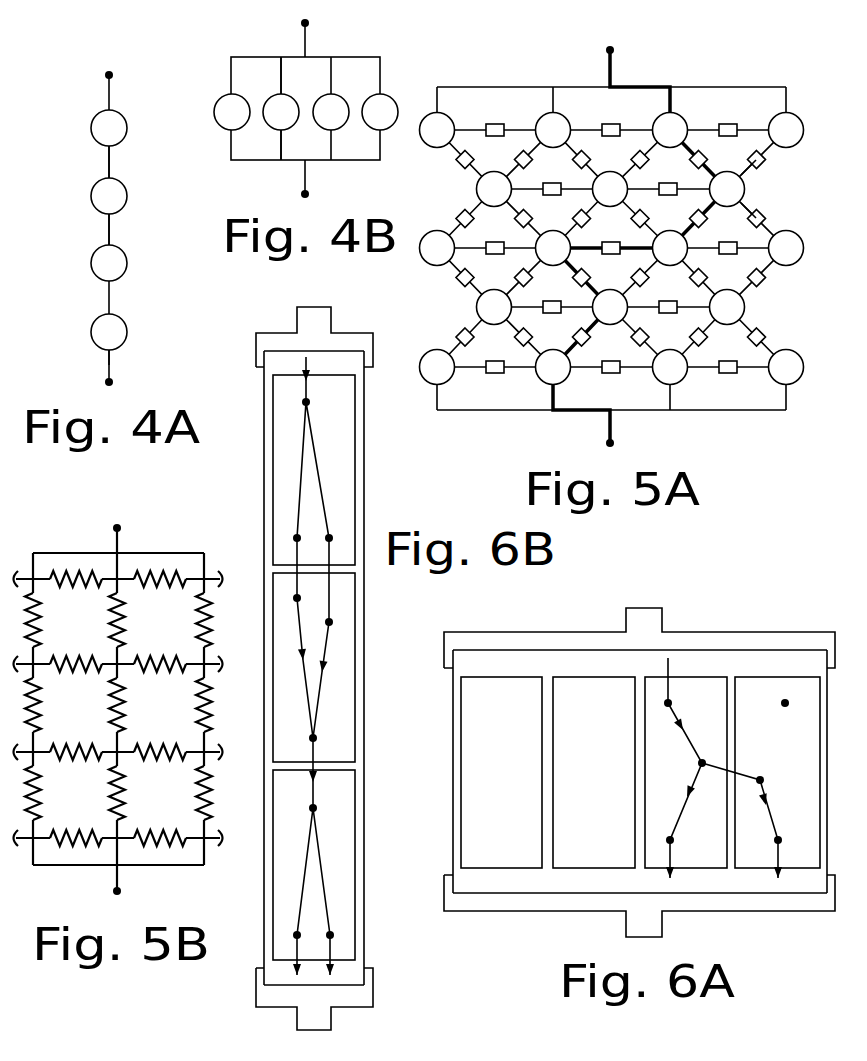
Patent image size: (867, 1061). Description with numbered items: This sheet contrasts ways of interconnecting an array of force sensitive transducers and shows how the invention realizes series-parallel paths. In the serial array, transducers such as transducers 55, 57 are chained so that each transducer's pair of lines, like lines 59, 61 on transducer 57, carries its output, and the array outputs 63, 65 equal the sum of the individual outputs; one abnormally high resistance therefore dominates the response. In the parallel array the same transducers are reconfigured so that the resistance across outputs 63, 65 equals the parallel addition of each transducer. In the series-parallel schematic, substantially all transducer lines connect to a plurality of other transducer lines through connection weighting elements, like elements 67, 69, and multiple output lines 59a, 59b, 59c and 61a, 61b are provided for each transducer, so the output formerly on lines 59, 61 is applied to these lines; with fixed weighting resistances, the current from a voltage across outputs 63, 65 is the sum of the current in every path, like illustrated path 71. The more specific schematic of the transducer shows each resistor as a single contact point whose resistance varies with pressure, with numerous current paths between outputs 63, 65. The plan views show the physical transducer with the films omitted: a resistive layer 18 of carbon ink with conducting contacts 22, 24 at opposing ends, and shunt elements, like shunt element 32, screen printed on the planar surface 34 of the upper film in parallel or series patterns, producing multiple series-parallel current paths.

In FIG. 6B, the resistive layer 18 is at (334, 364).
In FIG. 6A, the resistive layer 18 is at (560, 876).
In FIG. 6B, the conducting contact 22 is at (346, 343).
In FIG. 6A, the conducting contact 22 is at (714, 640).
In FIG. 6B, the conducting contact 24 is at (362, 1001).
In FIG. 6A, the conducting contact 24 is at (745, 902).
In FIG. 6B, the shunt element 32 is at (343, 497).
In FIG. 6A, the shunt element 32 is at (578, 690).
In FIG. 6B, the substantially planar surface 34 is at (340, 707).
In FIG. 6A, the substantially planar surface 34 is at (710, 692).
In FIG. 4A, the transducer 55 is at (94, 130).
In FIG. 4B, the transducer 55 is at (214, 112).
In FIG. 5A, the transducer 55 is at (682, 116).
In FIG. 4A, the transducer 57 is at (95, 207).
In FIG. 4B, the transducer 57 is at (266, 102).
In FIG. 5A, the transducer 57 is at (746, 190).
In FIG. 4A, the line 59 is at (108, 164).
In FIG. 4B, the line 59 is at (278, 72).
In FIG. 5A, the output line 59a is at (757, 150).
In FIG. 5A, the output line 59b is at (745, 176).
In FIG. 5A, the output line 59c is at (690, 158).
In FIG. 4A, the line 61 is at (108, 236).
In FIG. 4B, the line 61 is at (280, 145).
In FIG. 5A, the output line 61a is at (760, 232).
In FIG. 5A, the output line 61b is at (746, 203).
In FIG. 4A, the output 63 is at (112, 72).
In FIG. 4B, the output 63 is at (307, 23).
In FIG. 5A, the output 63 is at (610, 50).
In FIG. 5B, the output 63 is at (119, 528).
In FIG. 4A, the output 65 is at (111, 386).
In FIG. 4B, the output 65 is at (307, 196).
In FIG. 5A, the output 65 is at (608, 444).
In FIG. 5B, the output 65 is at (117, 893).
In FIG. 5A, the connection weighting element 67 is at (698, 150).
In FIG. 5A, the connection weighting element 69 is at (789, 92).
In FIG. 5A, the current path 71 is at (596, 328).